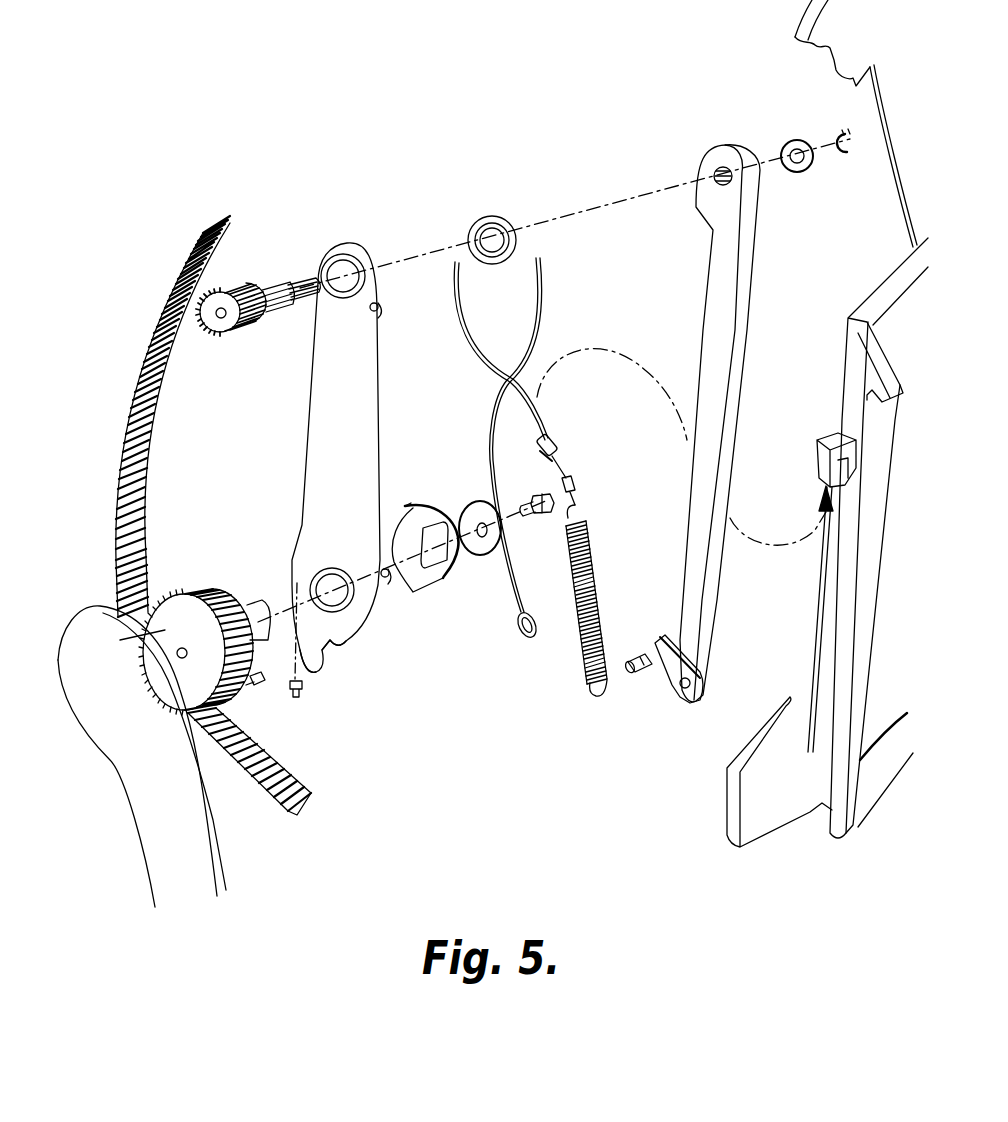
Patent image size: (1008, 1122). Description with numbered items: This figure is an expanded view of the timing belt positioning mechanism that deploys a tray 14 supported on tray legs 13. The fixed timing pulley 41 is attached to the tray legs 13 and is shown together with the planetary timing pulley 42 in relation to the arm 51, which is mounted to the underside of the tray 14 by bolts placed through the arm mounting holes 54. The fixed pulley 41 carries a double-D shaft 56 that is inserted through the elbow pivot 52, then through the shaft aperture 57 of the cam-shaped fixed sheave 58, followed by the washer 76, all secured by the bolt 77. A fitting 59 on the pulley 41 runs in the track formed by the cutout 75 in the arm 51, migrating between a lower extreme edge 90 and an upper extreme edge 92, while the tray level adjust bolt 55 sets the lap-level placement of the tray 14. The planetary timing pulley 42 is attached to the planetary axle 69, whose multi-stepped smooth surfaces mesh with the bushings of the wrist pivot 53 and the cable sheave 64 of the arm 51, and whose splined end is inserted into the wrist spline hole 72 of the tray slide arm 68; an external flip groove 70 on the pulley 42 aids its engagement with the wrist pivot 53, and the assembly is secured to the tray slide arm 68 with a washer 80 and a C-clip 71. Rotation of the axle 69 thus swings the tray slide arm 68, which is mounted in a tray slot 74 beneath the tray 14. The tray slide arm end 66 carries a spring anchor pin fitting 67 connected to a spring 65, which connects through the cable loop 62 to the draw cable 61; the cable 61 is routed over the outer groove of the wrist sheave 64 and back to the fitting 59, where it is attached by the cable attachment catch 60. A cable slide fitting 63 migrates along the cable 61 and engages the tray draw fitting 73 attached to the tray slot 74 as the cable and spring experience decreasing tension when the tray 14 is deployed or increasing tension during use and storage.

The tray legs 13 is at (142, 818).
The tray 14 is at (828, 68).
The timing pulley 41 is at (107, 633).
The planetary timing pulley 42 is at (216, 325).
The arm 51 is at (320, 424).
The elbow pivot 52 is at (303, 518).
The wrist pivot 53 is at (331, 252).
The arm mounting holes 54 is at (378, 310).
The tray level adjust bolt 55 is at (302, 693).
The double-D shaft 56 is at (242, 605).
The shaft aperture 57 is at (428, 585).
The cam-shaped fixed sheave 58 is at (412, 505).
The fitting 59 is at (257, 685).
The cable attachment catch 60 is at (521, 629).
The draw cable 61 is at (496, 428).
The cable loop 62 is at (576, 488).
The cable slide fitting 63 is at (563, 440).
The cable sheave 64 is at (505, 217).
The spring 65 is at (588, 660).
The tray slide arm end 66 is at (668, 695).
The spring anchor pin fitting 67 is at (628, 670).
The tray slide arm 68 is at (752, 288).
The planetary axle 69 is at (281, 276).
The external flip groove 70 is at (312, 283).
The C-clip 71 is at (840, 132).
The wrist spline hole 72 is at (712, 172).
The tray draw fitting 73 is at (818, 472).
The tray slot 74 is at (862, 370).
The cutout 75 is at (310, 670).
The washer 76 is at (475, 508).
The bolt 77 is at (532, 518).
The washer 80 is at (785, 150).
The lower extreme edge 90 is at (330, 648).
The upper extreme edge 92 is at (258, 603).